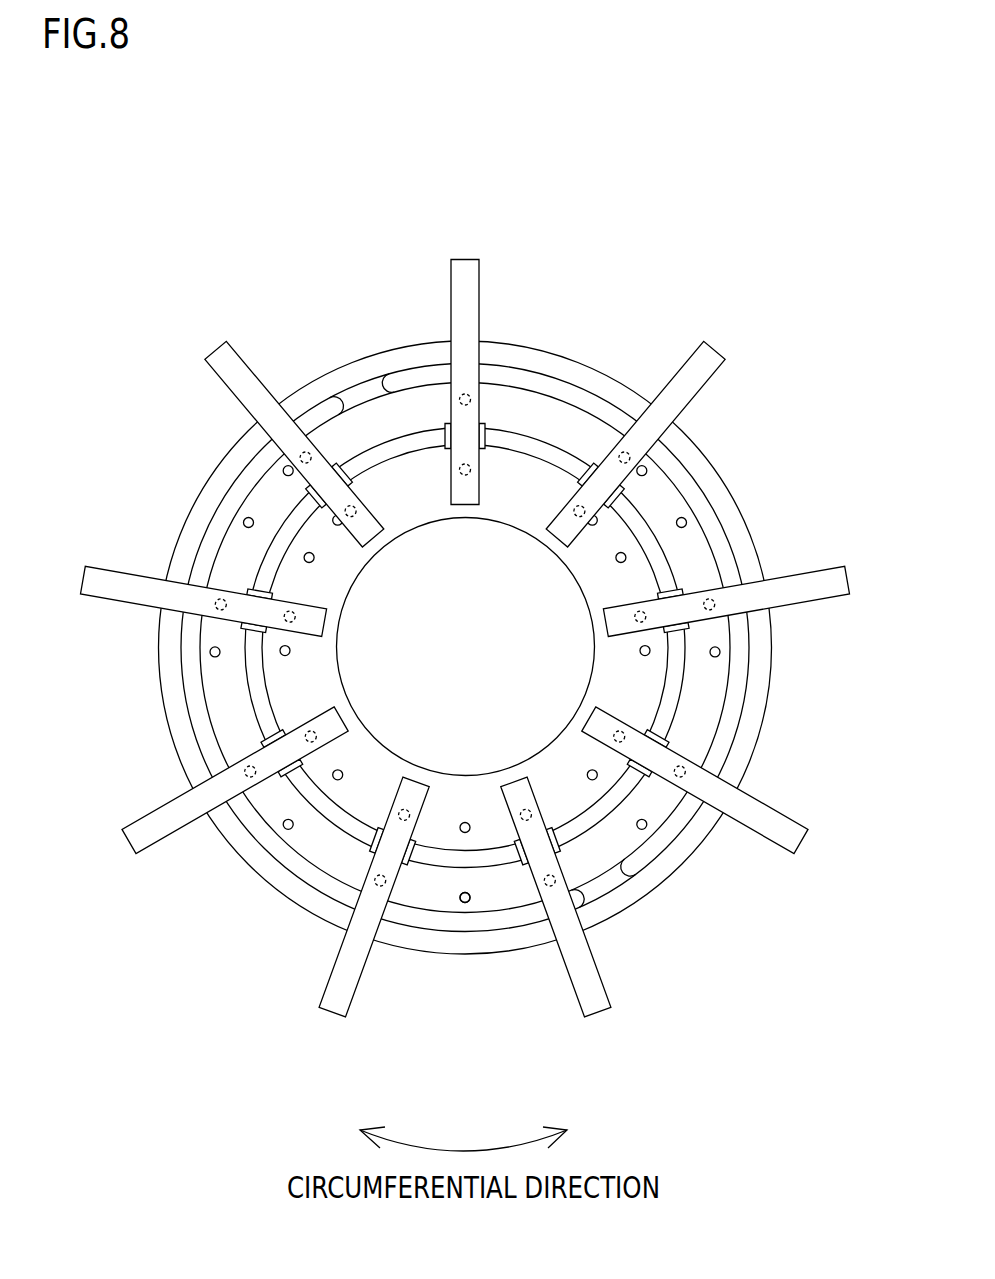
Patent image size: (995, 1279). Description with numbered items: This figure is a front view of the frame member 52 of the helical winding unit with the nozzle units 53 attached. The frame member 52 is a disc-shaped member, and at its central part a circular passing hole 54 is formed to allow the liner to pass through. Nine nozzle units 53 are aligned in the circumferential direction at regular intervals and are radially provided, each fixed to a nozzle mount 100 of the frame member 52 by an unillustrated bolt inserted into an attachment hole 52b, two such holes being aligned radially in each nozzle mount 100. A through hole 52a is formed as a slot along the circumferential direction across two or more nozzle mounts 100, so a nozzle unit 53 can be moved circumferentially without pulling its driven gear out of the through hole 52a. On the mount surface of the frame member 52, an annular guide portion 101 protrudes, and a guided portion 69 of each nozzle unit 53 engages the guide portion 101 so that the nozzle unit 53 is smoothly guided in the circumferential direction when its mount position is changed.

The frame member 52 is at (108, 278).
The through hole 52a is at (192, 732).
The attachment hole 52b is at (467, 824).
The nozzle unit 53 is at (470, 297).
The passing hole 54 is at (484, 662).
The guided portion 69 is at (450, 436).
The nozzle mount 100 is at (464, 925).
The guide portion 101 is at (385, 447).